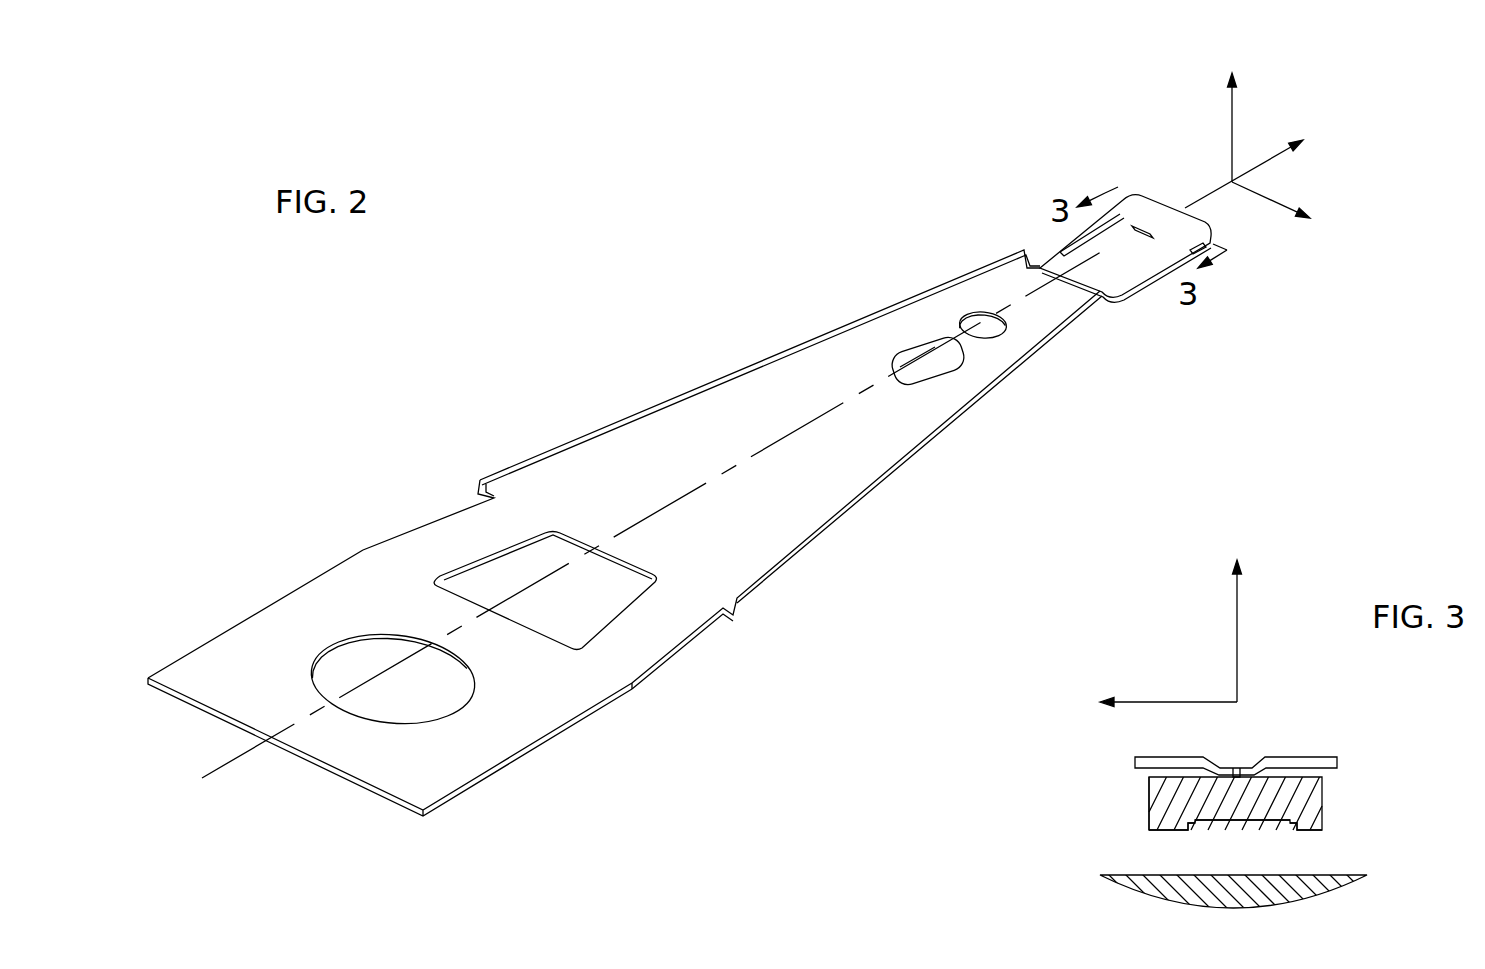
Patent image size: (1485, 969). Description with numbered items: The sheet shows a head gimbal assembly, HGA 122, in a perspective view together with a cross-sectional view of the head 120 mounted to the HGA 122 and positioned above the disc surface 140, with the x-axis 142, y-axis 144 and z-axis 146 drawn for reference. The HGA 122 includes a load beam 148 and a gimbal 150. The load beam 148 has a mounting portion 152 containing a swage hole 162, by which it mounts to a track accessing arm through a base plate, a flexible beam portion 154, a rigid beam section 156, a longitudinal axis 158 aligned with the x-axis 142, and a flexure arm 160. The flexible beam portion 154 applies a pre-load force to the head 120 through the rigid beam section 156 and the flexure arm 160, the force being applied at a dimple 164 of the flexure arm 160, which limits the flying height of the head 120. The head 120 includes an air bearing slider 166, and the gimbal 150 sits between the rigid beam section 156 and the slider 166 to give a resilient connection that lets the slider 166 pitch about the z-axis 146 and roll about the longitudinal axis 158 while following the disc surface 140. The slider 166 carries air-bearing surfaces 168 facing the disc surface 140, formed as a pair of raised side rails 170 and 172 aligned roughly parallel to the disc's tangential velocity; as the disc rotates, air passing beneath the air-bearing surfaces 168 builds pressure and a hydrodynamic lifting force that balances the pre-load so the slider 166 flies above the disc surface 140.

In FIG. 2, the head 120 is at (1166, 298).
In FIG. 3, the head 120 is at (1351, 795).
In FIG. 2, the HGA 122 is at (620, 343).
In FIG. 3, the disc surface 140 is at (1345, 875).
In FIG. 2, the x-axis 142 is at (1265, 162).
In FIG. 2, the y-axis 144 is at (1235, 114).
In FIG. 3, the y-axis 144 is at (1244, 610).
In FIG. 2, the z-axis 146 is at (1300, 214).
In FIG. 3, the z-axis 146 is at (1159, 687).
In FIG. 2, the load beam 148 is at (610, 410).
In FIG. 3, the gimbal 150 is at (1297, 757).
In FIG. 2, the mounting portion 152 is at (272, 612).
In FIG. 2, the flexible beam portion 154 is at (435, 532).
In FIG. 2, the rigid beam section 156 is at (828, 368).
In FIG. 2, the longitudinal axis 158 is at (787, 440).
In FIG. 2, the flexure arm 160 is at (1103, 251).
In FIG. 2, the swage hole 162 is at (397, 697).
In FIG. 2, the dimple 164 is at (1157, 222).
In FIG. 3, the dimple 164 is at (1233, 768).
In FIG. 3, the slider 166 is at (1148, 807).
In FIG. 3, the air-bearing surfaces 168 is at (1228, 832).
In FIG. 3, the side rail 170 is at (1188, 829).
In FIG. 3, the side rail 172 is at (1300, 831).